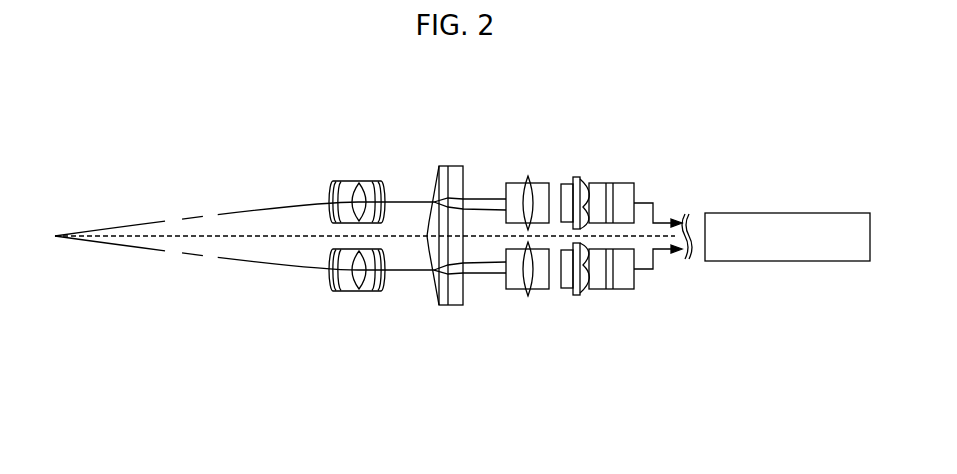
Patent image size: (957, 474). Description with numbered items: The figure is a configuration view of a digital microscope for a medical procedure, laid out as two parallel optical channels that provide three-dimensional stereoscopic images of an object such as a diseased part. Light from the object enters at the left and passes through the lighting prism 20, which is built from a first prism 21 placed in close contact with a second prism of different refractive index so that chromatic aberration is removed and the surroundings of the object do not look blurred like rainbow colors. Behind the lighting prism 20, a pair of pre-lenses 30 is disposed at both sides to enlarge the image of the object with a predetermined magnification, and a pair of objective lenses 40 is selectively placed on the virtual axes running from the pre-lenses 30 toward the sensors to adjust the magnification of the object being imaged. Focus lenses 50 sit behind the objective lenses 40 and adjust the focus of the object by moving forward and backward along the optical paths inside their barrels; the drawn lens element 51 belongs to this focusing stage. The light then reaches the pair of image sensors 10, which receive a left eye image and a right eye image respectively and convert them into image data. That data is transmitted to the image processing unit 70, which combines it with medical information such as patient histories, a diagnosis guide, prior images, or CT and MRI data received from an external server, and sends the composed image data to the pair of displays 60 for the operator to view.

The image sensor 10 is at (577, 177).
The lighting prism 20 is at (445, 237).
The first prism 21 is at (447, 305).
The pre-lens 30 is at (362, 181).
The objective lens 40 is at (357, 236).
The focus lens 50 is at (522, 237).
The lens 51 is at (541, 183).
The display 60 is at (618, 183).
The image processing unit 70 is at (833, 213).